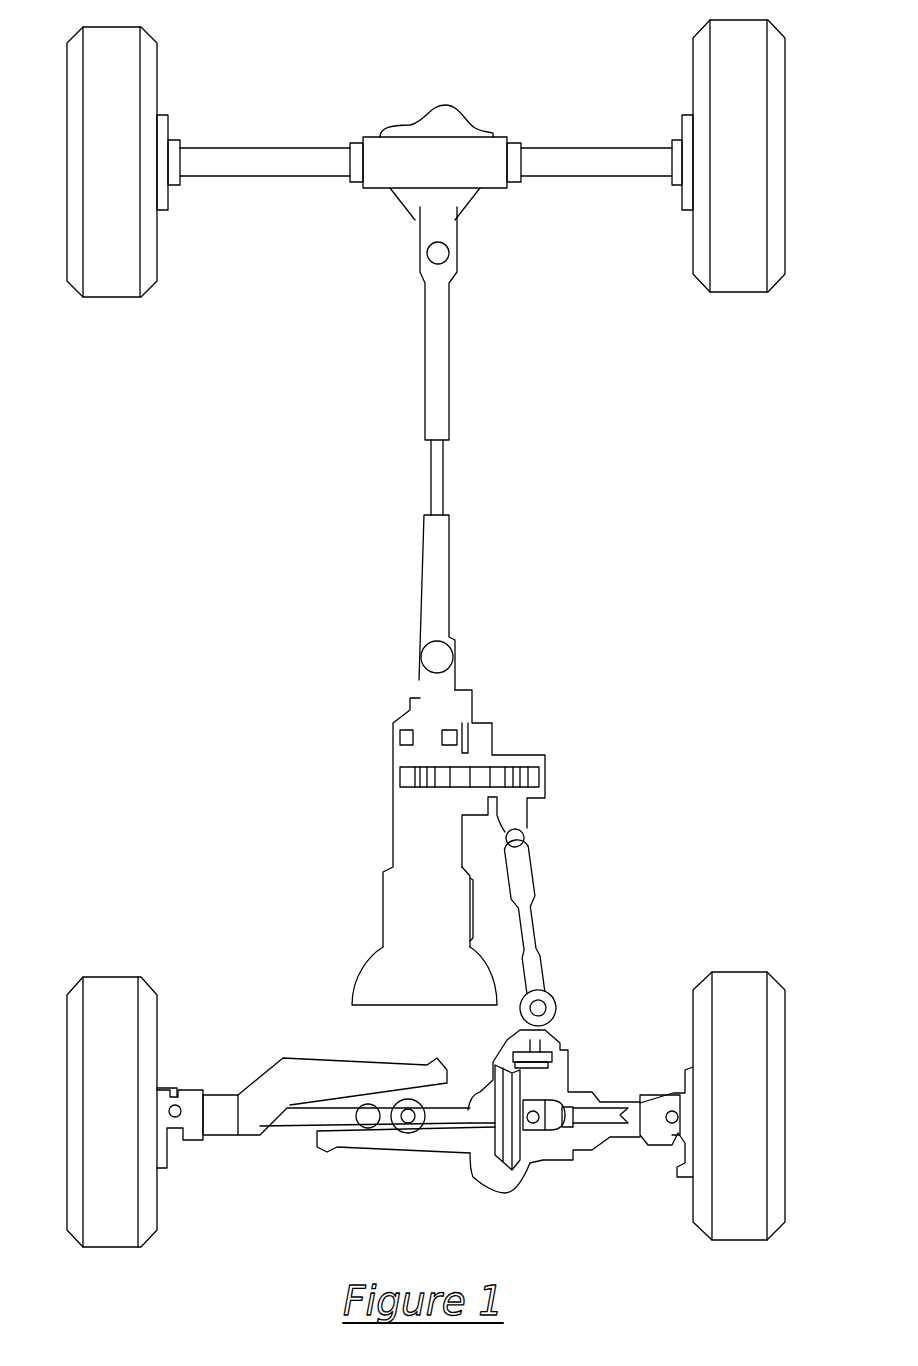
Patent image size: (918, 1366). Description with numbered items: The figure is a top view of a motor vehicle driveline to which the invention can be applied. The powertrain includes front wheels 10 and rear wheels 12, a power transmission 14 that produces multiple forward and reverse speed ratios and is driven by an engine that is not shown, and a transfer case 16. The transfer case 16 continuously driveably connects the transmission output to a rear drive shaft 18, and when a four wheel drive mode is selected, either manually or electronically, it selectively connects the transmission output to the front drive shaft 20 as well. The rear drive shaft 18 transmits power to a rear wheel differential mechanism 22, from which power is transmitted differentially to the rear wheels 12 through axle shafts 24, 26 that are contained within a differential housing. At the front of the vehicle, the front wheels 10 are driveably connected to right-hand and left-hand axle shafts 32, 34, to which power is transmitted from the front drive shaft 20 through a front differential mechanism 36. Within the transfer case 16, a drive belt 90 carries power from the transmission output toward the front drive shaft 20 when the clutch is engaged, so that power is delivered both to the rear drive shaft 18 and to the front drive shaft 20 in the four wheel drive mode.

The front wheels 10 is at (103, 987).
The rear wheels 12 is at (110, 273).
The power transmission 14 is at (377, 980).
The transfer case 16 is at (408, 852).
The rear drive shaft 18 is at (435, 397).
The front drive shaft 20 is at (533, 972).
The rear wheel differential mechanism 22 is at (403, 157).
The axle shaft 24 is at (285, 162).
The axle shaft 26 is at (620, 160).
The right-hand axle shaft 32 is at (297, 1118).
The left-hand axle shaft 34 is at (592, 1117).
The front differential mechanism 36 is at (500, 1172).
The drive belt 90 is at (477, 778).